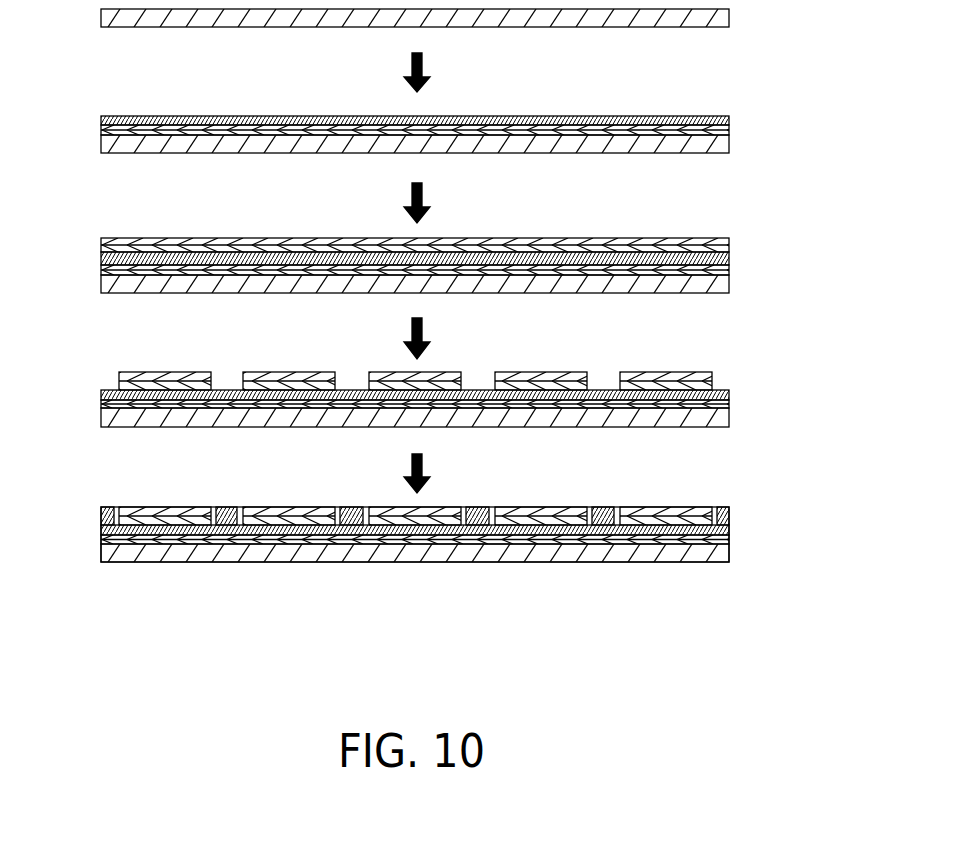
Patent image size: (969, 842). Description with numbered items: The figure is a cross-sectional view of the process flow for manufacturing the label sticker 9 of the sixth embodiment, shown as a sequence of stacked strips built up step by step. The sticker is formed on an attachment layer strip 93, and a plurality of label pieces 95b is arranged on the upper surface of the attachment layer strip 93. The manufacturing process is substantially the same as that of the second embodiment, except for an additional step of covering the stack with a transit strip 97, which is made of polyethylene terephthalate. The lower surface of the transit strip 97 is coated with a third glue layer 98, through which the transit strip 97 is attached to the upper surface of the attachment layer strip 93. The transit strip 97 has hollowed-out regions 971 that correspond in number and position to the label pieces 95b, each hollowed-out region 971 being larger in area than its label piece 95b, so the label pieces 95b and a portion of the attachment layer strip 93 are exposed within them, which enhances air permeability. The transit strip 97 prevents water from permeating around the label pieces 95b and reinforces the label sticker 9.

The label sticker 9 is at (105, 482).
The attachment layer strip 93 is at (731, 119).
The label pieces 95b is at (119, 376).
The transit strip 97 is at (728, 507).
The third glue layer 98 is at (730, 522).
The hollowed-out regions 971 is at (589, 507).